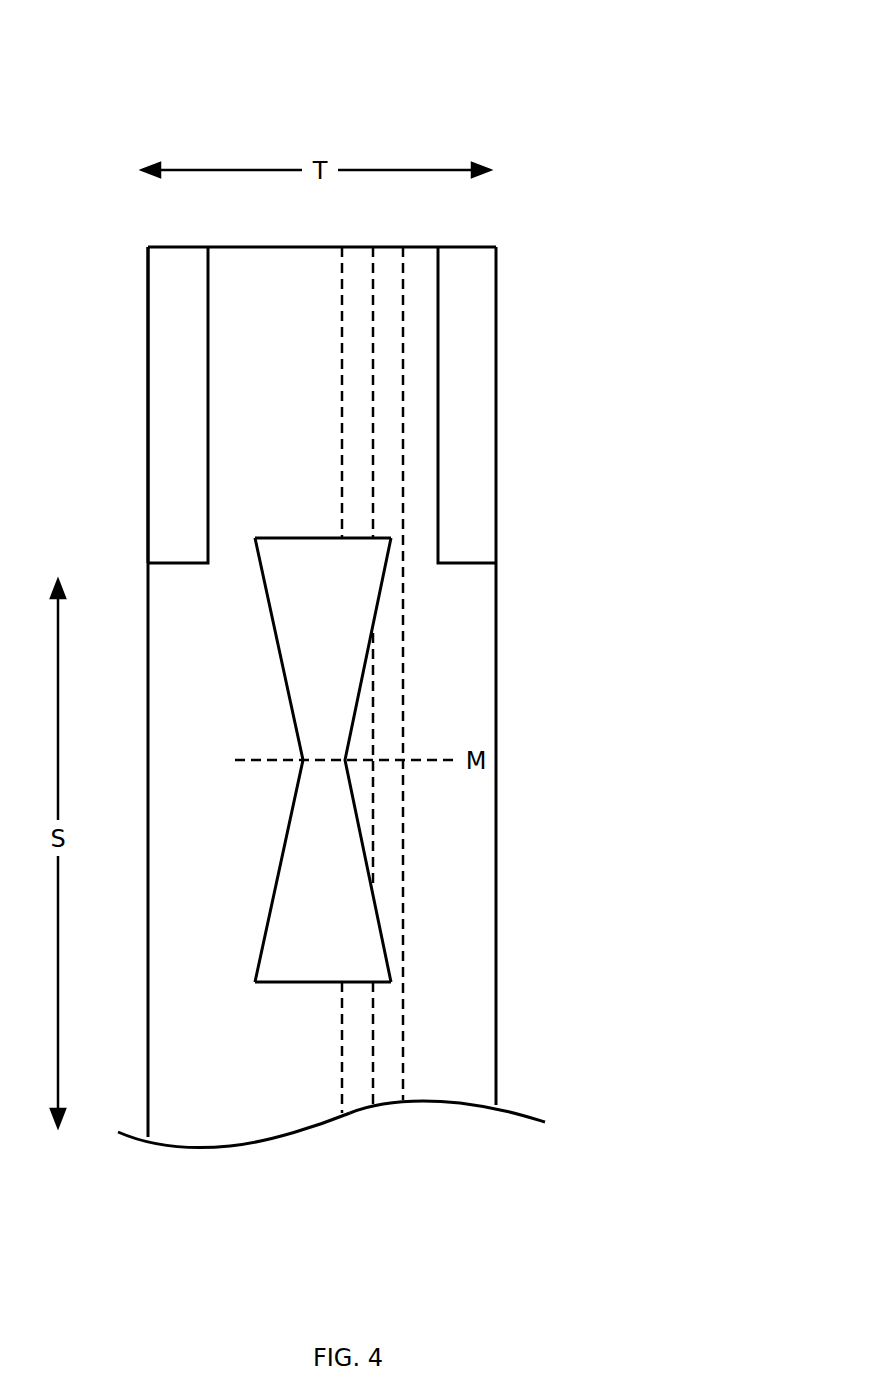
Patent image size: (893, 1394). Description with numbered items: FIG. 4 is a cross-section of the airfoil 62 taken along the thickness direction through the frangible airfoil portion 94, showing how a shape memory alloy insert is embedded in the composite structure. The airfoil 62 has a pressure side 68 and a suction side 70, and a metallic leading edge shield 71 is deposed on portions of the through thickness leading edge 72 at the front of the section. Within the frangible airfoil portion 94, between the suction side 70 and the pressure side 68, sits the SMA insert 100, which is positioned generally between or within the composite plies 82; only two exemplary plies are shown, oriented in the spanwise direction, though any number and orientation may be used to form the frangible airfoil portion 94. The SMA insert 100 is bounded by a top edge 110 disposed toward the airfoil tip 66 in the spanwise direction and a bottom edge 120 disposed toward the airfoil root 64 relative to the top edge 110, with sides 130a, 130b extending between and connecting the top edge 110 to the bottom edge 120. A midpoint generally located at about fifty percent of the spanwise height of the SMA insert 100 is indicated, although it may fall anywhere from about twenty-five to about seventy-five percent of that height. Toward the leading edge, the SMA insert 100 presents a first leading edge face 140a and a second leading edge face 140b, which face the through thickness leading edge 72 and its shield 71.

The airfoil 62 is at (76, 84).
The airfoil root 64 is at (183, 1195).
The airfoil tip 66 is at (258, 246).
The pressure side 68 is at (69, 477).
The suction side 70 is at (527, 481).
The metallic leading edge shield 71 is at (165, 320).
The through thickness leading edge 72 is at (247, 1180).
The composite plies 82 is at (353, 1107).
The frangible airfoil portion 94 is at (472, 858).
The SMA insert 100 is at (317, 757).
The top edge 110 is at (307, 537).
The bottom edge 120 is at (287, 982).
The side 130a is at (267, 609).
The side 130b is at (375, 620).
The first leading edge face 140a is at (323, 550).
The second leading edge face 140b is at (321, 979).